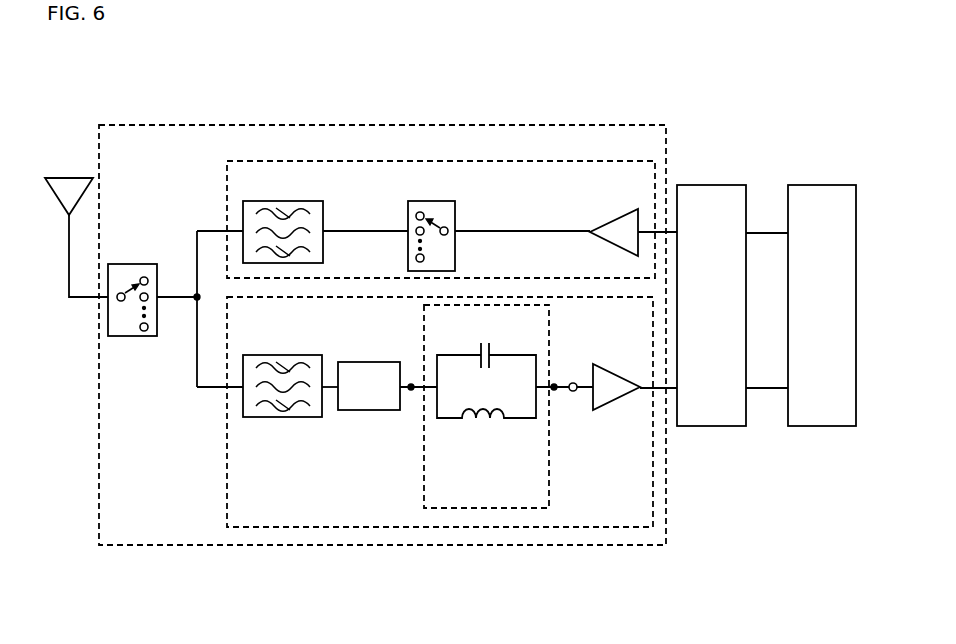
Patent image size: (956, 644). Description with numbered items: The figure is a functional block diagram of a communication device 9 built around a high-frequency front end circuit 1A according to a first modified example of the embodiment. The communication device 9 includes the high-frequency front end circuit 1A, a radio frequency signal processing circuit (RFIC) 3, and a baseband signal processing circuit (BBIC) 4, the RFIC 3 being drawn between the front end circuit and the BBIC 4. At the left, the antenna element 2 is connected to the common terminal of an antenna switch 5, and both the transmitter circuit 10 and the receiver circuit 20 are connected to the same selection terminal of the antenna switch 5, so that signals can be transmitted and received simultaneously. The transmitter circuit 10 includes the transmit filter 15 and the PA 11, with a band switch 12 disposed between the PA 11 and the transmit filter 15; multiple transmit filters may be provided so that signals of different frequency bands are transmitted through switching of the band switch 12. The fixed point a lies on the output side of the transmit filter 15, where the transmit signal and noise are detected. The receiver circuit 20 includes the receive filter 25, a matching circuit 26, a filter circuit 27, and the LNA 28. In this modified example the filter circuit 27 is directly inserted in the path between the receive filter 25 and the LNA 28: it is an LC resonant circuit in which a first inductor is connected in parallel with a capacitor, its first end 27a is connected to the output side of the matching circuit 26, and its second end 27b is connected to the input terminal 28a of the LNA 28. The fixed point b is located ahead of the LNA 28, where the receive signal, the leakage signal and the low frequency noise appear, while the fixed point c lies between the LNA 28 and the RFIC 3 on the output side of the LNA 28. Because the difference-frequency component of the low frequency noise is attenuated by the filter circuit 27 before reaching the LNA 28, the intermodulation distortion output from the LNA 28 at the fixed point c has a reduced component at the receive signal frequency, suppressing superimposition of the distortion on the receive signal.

The communication device 9 is at (143, 69).
The high-frequency front end circuit 1A is at (200, 126).
The antenna element 2 is at (63, 177).
The radio frequency signal processing circuit (RFIC) 3 is at (703, 185).
The baseband signal processing circuit (BBIC) 4 is at (815, 185).
The antenna switch 5 is at (134, 265).
The transmitter circuit 10 is at (349, 161).
The PA 11 is at (617, 217).
The band switch 12 is at (457, 207).
The transmit filter 15 is at (323, 210).
The receiver circuit 20 is at (226, 493).
The receive filter 25 is at (275, 418).
The matching circuit 26 is at (358, 410).
The filter circuit 27 is at (424, 481).
The first end 27a is at (411, 383).
The second end 27b is at (553, 385).
The LNA 28 is at (609, 372).
The input terminal 28a is at (573, 382).
The fixed point a is at (192, 268).
The fixed point b is at (563, 398).
The fixed point c is at (649, 400).